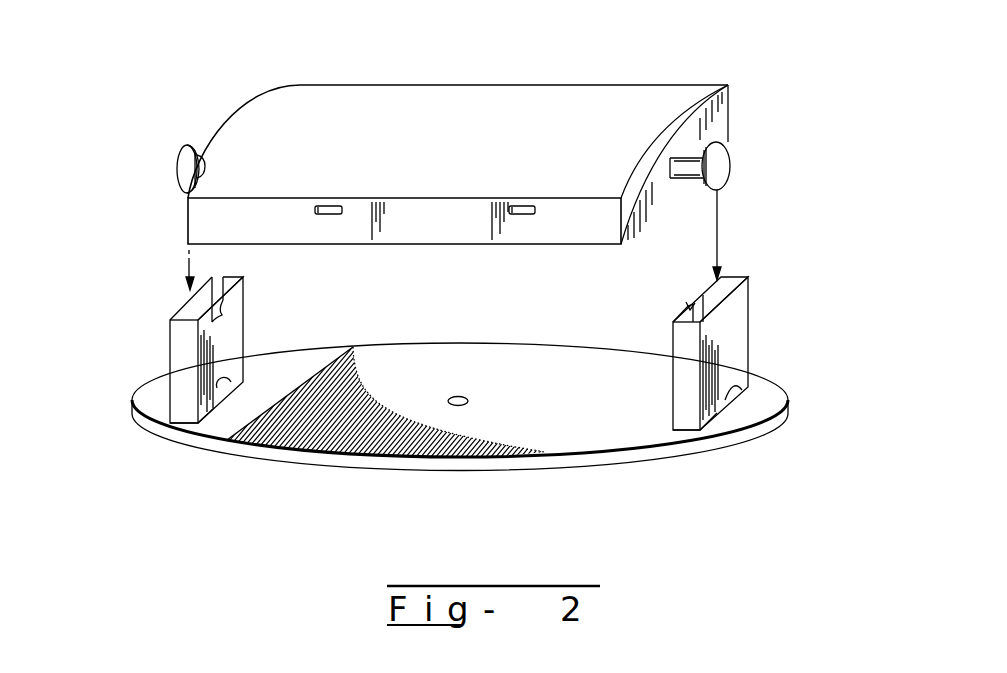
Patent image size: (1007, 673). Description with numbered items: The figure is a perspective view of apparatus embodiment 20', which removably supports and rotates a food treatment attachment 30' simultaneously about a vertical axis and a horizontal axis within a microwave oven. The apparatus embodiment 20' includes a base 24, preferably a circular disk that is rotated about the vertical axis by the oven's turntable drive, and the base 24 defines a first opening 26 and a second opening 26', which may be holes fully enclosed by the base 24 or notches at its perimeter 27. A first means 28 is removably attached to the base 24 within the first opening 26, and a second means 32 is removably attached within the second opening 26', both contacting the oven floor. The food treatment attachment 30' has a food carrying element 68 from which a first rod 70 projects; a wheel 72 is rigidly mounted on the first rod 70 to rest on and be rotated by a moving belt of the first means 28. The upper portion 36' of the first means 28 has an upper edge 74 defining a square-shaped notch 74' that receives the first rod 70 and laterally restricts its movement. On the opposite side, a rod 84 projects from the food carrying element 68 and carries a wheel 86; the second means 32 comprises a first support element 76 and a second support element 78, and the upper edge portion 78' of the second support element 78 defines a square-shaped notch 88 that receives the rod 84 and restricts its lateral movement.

The apparatus embodiment 20' is at (829, 255).
The base 24 is at (567, 437).
The first opening 26 is at (731, 465).
The second opening 26' is at (177, 470).
The perimeter 27 is at (403, 468).
The first means 28 is at (732, 343).
The food treatment attachment 30' is at (482, 129).
The second means 32 is at (180, 353).
The upper portion 36' is at (626, 319).
The food carrying element 68 is at (460, 123).
The first rod 70 is at (690, 163).
The wheel 72 is at (725, 163).
The upper edge 74 is at (640, 347).
The square-shaped notch 74' is at (740, 245).
The first support element 76 is at (168, 338).
The second support element 78 is at (266, 350).
The upper edge portion 78' is at (270, 289).
The rod 84 is at (200, 160).
The wheel 86 is at (178, 167).
The square-shaped notch 88 is at (353, 378).